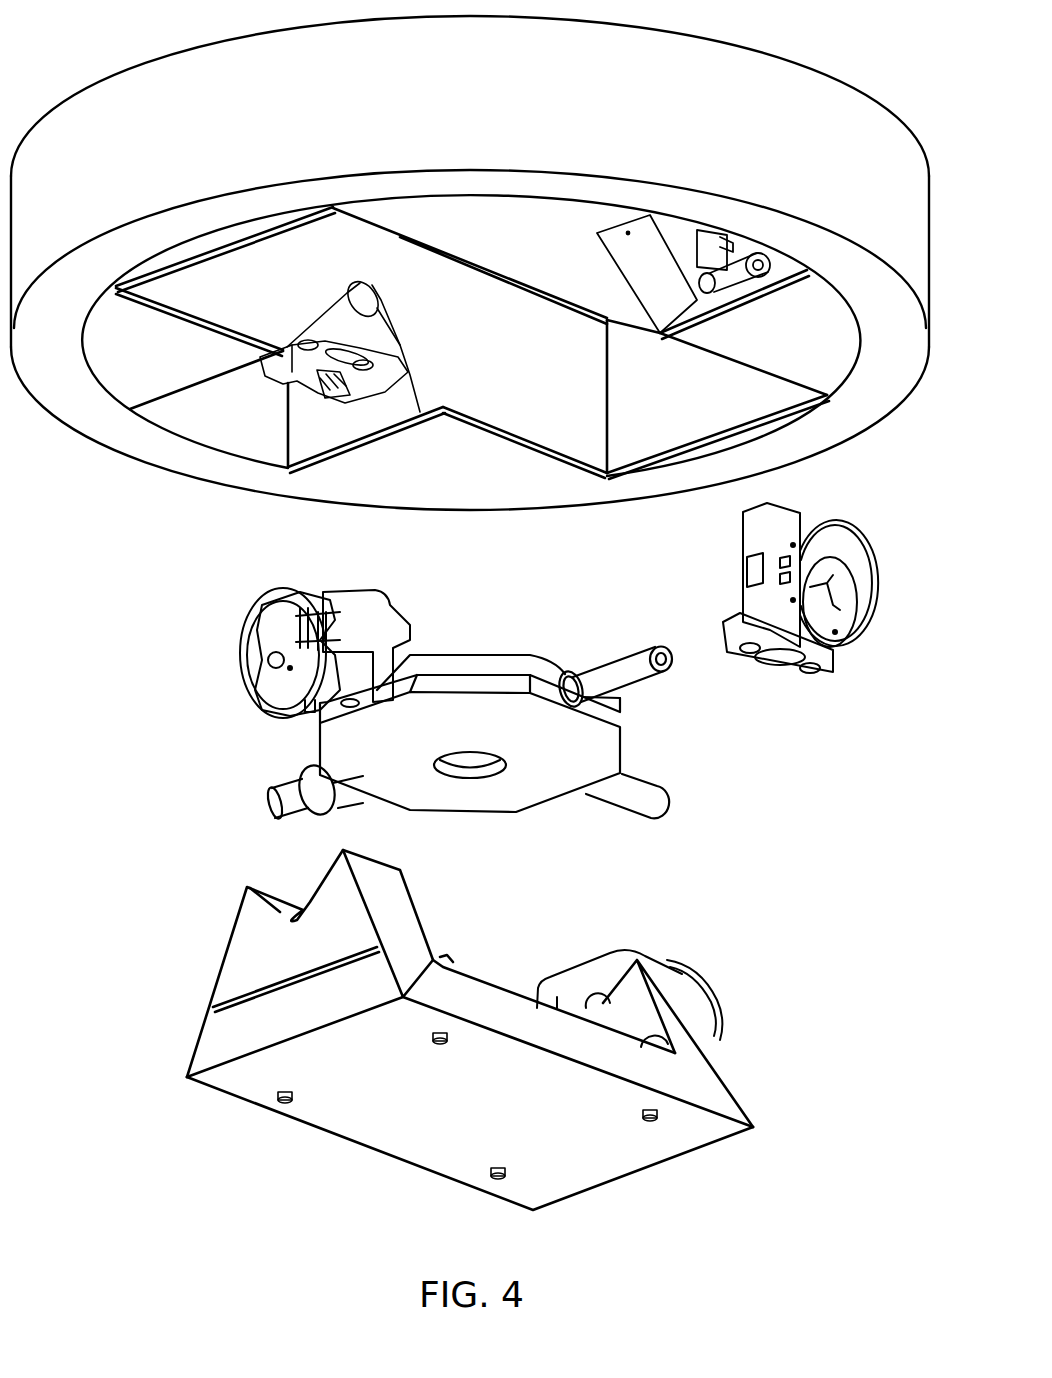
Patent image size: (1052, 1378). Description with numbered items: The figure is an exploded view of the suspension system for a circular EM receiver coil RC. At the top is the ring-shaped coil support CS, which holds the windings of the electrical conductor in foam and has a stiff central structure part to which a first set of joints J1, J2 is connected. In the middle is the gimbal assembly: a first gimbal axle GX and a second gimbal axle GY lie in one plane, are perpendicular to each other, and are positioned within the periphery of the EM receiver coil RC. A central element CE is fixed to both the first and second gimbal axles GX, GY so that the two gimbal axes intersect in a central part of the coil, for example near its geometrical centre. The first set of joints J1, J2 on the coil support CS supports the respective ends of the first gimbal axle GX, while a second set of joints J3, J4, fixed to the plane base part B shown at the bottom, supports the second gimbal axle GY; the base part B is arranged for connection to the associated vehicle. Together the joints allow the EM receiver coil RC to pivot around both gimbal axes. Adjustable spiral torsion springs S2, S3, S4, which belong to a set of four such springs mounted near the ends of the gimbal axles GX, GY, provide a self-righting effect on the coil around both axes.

The EM receiver coil RC is at (118, 50).
The coil support CS is at (472, 283).
The first joint J1 is at (342, 383).
The second joint J2 is at (784, 686).
The third joint J3 is at (603, 975).
The fourth joint J4 is at (353, 651).
The adjustable spiral torsion spring S2 is at (849, 548).
The adjustable spiral torsion spring S3 is at (713, 986).
The adjustable spiral torsion spring S4 is at (272, 606).
The first gimbal axle GX is at (611, 675).
The second gimbal axle GY is at (622, 783).
The central element CE is at (470, 733).
The base part B is at (470, 1030).